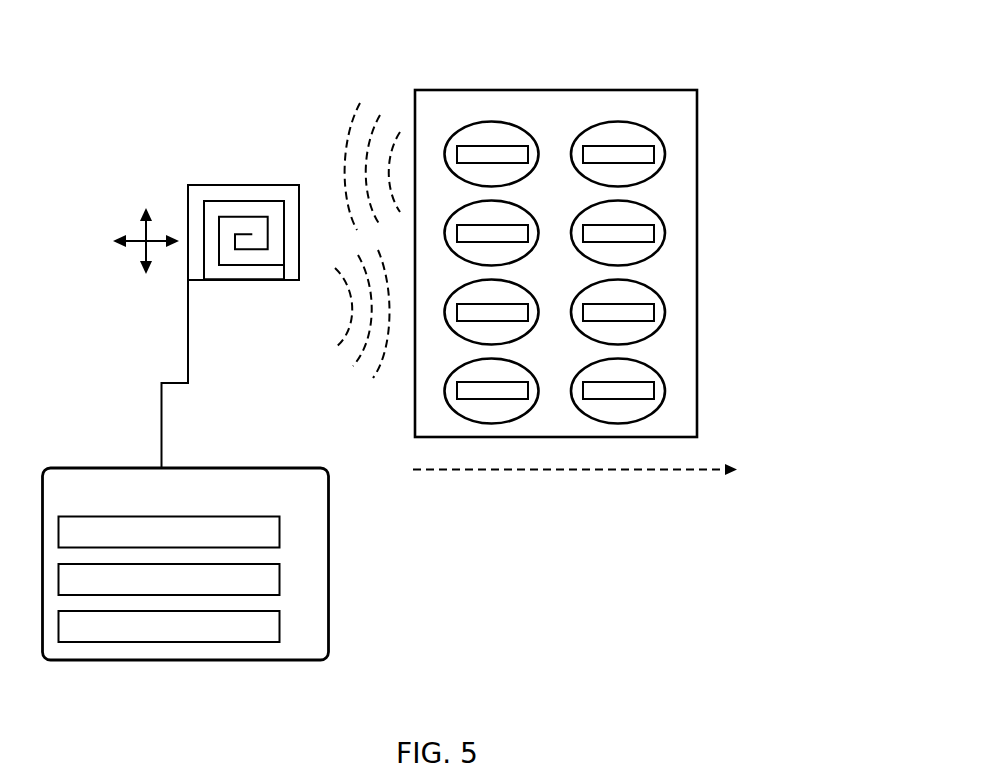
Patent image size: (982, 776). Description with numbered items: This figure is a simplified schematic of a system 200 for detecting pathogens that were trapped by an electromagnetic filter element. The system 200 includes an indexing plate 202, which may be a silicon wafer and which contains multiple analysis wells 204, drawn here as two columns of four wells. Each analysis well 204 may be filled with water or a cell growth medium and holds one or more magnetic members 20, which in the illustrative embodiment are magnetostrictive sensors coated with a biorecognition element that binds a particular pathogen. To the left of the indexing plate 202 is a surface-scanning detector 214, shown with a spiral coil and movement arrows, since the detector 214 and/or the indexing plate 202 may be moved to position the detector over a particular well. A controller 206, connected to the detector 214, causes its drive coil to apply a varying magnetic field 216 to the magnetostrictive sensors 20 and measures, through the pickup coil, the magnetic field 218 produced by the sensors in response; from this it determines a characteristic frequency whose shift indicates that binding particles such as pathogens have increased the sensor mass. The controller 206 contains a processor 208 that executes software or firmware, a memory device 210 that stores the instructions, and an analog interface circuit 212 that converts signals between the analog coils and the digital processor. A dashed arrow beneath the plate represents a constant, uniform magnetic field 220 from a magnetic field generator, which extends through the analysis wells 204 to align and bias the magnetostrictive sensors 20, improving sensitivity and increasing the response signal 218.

The system 200 is at (812, 70).
The indexing plate 202 is at (682, 107).
The analysis wells 204 is at (500, 133).
The magnetic members 20 is at (467, 150).
The surface-scanning detector 214 is at (169, 191).
The varying magnetic field 216 is at (337, 364).
The magnetic field 218 is at (379, 106).
The controller 206 is at (273, 468).
The processor 208 is at (280, 532).
The memory device 210 is at (280, 580).
The analog interface circuit 212 is at (280, 626).
The uniform magnetic field 220 is at (593, 471).